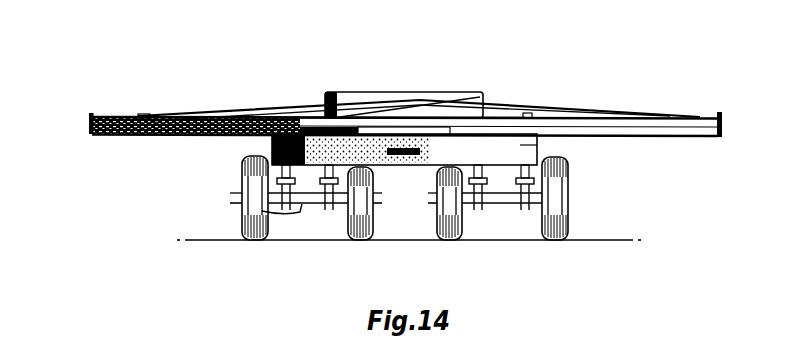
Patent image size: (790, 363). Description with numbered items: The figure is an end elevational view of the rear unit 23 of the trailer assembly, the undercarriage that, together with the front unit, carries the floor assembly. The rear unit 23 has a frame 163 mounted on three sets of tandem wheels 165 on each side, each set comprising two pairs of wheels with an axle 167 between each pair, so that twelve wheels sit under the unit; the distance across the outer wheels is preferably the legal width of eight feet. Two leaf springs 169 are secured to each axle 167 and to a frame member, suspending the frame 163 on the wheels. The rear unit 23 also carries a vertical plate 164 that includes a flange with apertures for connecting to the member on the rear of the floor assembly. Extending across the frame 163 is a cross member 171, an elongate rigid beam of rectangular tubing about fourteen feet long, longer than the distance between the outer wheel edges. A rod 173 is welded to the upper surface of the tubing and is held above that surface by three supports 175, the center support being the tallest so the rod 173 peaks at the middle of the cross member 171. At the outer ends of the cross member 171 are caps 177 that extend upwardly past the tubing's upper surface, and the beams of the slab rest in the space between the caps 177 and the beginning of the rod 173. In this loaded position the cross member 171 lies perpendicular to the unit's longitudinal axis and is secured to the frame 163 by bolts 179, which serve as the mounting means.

The rear unit 23 is at (387, 145).
The frame 163 is at (520, 146).
The vertical plate 164 is at (363, 95).
The tandem wheels 165 is at (557, 195).
The axle 167 is at (262, 211).
The leaf springs 169 is at (277, 174).
The cross member 171 is at (143, 136).
The rod 173 is at (303, 105).
The supports 175 is at (403, 112).
The caps 177 is at (89, 117).
The bolts 179 is at (262, 108).